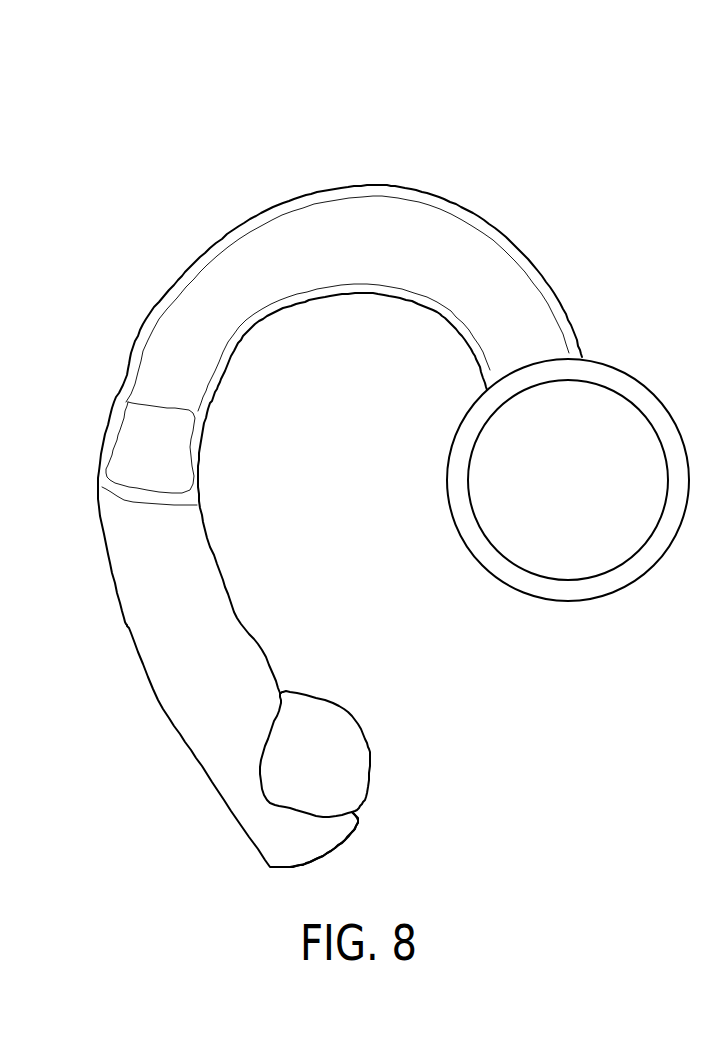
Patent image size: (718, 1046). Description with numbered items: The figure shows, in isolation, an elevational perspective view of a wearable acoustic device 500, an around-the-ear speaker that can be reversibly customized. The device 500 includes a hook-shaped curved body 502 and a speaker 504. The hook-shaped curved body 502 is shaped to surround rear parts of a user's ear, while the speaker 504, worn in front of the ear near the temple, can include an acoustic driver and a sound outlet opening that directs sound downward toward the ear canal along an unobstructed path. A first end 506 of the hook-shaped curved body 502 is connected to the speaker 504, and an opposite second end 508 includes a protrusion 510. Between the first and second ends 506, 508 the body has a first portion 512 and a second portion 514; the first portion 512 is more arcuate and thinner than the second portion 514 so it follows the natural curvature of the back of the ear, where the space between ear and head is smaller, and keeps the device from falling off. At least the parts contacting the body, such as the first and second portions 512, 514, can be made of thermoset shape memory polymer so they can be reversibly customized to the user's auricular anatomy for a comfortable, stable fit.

The wearable acoustic device 500 is at (526, 126).
The hook-shaped curved body 502 is at (186, 237).
The speaker 504 is at (551, 491).
The first end 506 is at (611, 338).
The second end 508 is at (384, 817).
The protrusion 510 is at (315, 720).
The first portion 512 is at (350, 248).
The second portion 514 is at (168, 626).